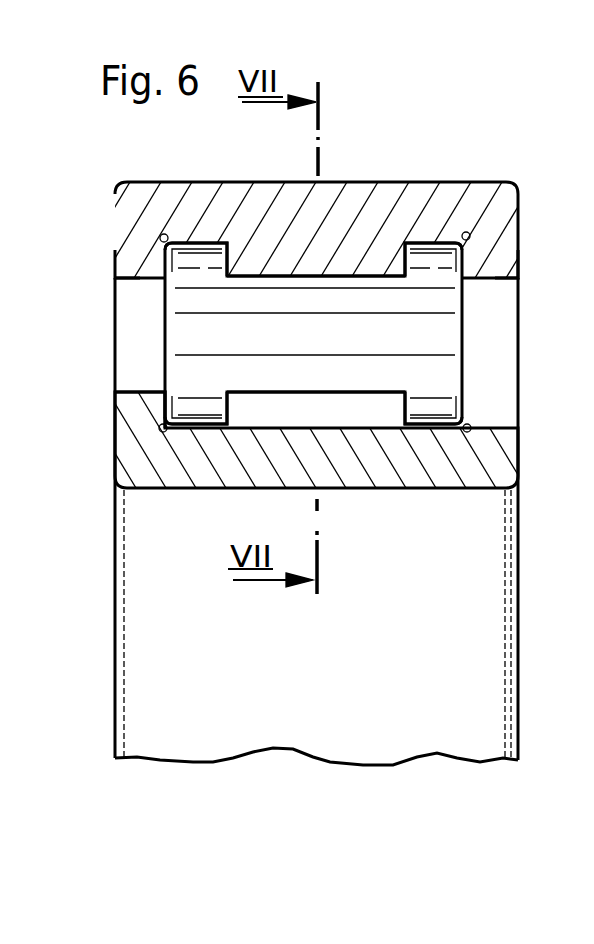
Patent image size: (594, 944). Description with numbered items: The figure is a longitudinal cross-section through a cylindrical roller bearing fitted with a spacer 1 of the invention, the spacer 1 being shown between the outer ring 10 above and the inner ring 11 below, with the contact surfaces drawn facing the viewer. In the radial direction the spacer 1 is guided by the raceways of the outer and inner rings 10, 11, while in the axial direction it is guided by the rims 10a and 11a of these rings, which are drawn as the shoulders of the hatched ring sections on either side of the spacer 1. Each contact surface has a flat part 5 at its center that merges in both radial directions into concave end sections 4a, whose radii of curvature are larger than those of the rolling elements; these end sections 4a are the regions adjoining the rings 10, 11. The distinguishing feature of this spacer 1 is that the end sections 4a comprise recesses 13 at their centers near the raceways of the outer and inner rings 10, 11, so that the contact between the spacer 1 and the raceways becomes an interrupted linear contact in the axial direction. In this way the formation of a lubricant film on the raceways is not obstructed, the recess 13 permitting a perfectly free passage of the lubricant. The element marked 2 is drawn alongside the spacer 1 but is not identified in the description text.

The spacer 1 is at (445, 298).
The sleeve 2 is at (467, 352).
The end sections 4a is at (198, 252).
The flat part of the contact surface 5 is at (183, 343).
The outer ring 10 is at (370, 213).
The rim of the outer ring 10a is at (138, 268).
The inner ring 11 is at (472, 465).
The rim of the inner ring 11a is at (147, 397).
The recess 13 is at (293, 267).